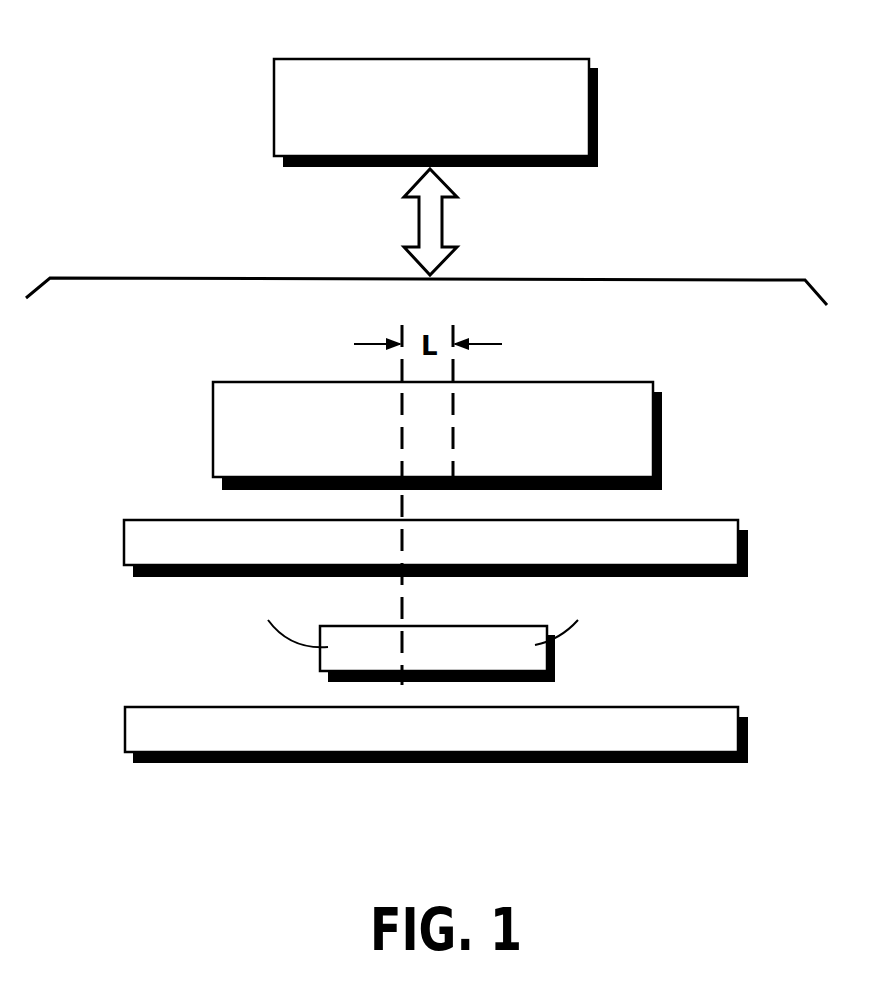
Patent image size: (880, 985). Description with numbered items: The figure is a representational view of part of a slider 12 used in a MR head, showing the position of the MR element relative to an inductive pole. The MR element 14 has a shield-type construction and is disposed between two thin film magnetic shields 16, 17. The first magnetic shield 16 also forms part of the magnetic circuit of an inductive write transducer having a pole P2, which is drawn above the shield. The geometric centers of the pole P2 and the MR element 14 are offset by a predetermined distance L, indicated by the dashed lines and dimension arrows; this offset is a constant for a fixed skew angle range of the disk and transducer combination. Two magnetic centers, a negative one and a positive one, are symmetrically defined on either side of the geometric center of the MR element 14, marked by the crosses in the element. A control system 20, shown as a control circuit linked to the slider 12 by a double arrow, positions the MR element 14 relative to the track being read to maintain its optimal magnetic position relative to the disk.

The control system 20 is at (500, 59).
The slider 12 is at (143, 322).
The pole P2 is at (566, 382).
The first magnetic shield 16 is at (660, 522).
The MR element 14 is at (535, 665).
The second magnetic shield 17 is at (679, 710).